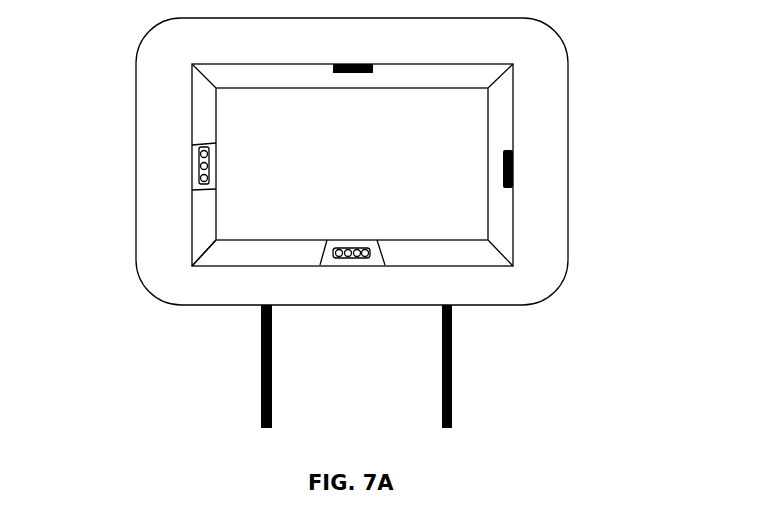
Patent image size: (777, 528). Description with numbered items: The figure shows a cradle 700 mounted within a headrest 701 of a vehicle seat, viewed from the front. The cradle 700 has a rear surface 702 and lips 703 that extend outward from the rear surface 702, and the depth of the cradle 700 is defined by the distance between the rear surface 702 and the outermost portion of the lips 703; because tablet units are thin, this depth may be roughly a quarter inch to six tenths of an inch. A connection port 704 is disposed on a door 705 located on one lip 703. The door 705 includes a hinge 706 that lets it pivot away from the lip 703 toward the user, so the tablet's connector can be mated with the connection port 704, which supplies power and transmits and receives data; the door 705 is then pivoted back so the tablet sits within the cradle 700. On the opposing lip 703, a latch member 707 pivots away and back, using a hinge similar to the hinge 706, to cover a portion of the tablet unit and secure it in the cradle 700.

The cradle 700 is at (513, 90).
The headrest 701 is at (137, 63).
The rear surface 702 is at (457, 208).
The lips 703 is at (220, 250).
The connection port 704 is at (190, 163).
The door 705 is at (193, 190).
The hinge 706 is at (357, 267).
The latch member 707 is at (513, 165).